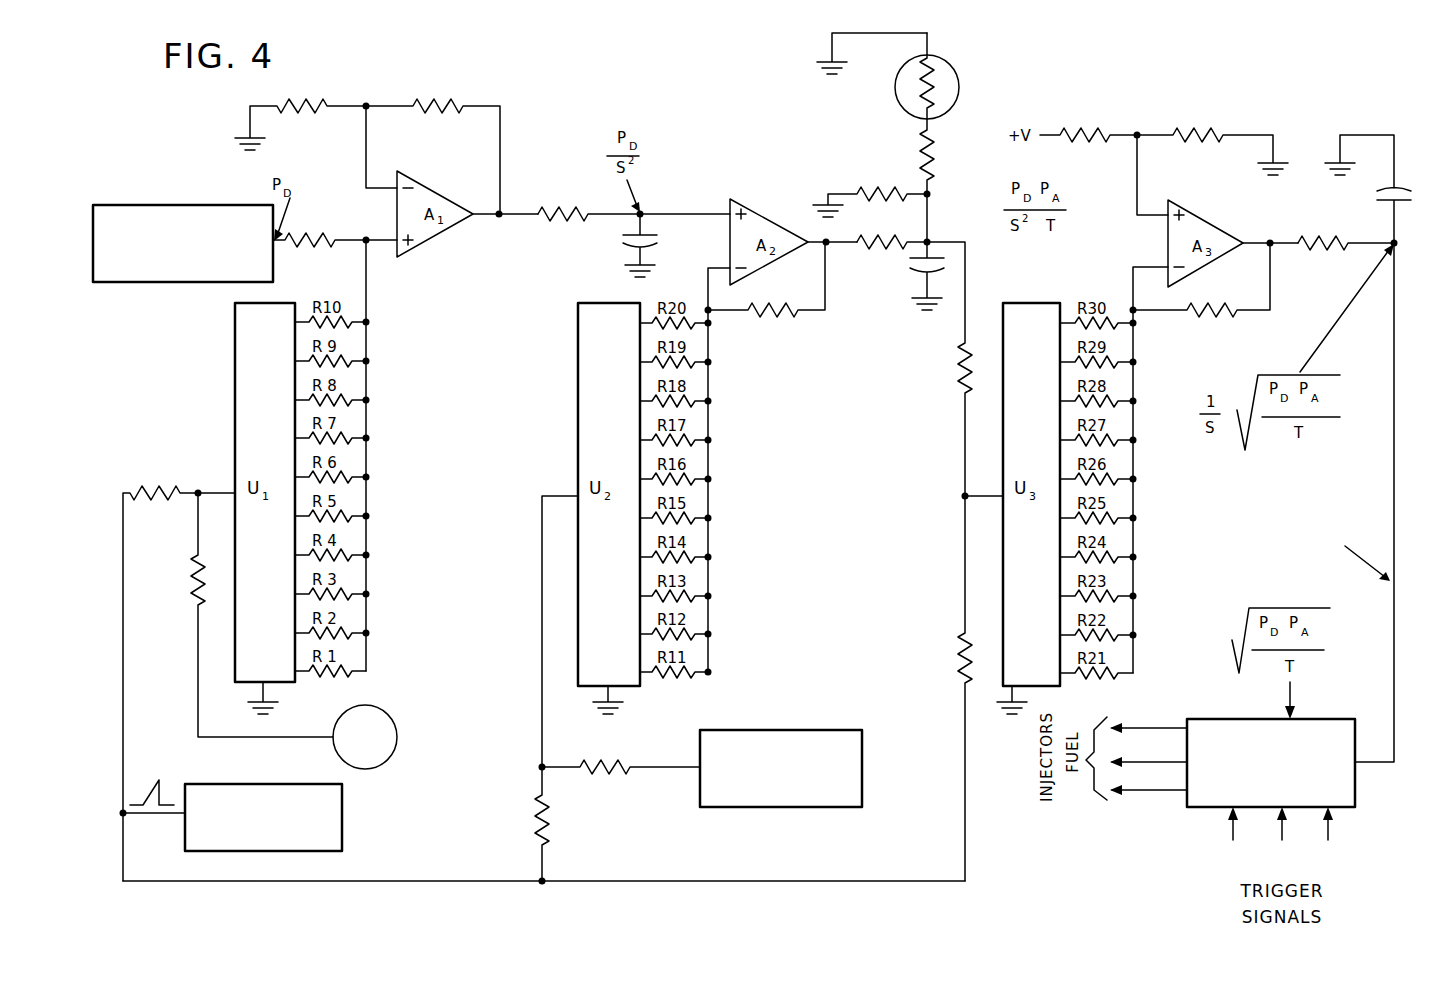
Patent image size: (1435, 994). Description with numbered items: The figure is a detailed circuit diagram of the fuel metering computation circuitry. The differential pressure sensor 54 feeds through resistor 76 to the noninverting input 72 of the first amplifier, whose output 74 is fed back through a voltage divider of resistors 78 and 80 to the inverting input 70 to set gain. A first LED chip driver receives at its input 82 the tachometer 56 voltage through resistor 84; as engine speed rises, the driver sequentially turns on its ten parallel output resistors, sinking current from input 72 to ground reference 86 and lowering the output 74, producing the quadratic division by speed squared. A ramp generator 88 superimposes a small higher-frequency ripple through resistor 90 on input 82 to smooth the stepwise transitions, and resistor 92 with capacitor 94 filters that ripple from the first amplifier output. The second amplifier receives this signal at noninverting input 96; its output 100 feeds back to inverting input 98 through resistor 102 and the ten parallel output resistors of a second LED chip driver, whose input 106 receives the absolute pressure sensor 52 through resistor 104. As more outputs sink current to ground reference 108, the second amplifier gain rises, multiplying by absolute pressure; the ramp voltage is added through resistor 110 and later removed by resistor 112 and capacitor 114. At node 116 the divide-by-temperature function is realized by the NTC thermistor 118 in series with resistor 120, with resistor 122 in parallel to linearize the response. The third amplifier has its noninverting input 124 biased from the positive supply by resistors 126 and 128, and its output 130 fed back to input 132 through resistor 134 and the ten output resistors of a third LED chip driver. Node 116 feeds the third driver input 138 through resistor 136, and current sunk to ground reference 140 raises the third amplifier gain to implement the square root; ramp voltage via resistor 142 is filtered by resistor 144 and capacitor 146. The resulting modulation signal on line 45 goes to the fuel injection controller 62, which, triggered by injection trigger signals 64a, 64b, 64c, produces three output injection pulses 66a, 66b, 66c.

The line 45 is at (1393, 471).
The absolute pressure sensor 52 is at (776, 808).
The differential pressure sensor 54 is at (165, 283).
The tachometer 56 is at (393, 719).
The fuel injection controller 62 is at (1368, 700).
The injection trigger signal 64a is at (1218, 838).
The injection trigger signal 64b is at (1278, 838).
The injection trigger signal 64c is at (1341, 837).
The output injection pulse 66a is at (1148, 721).
The output injection pulse 66b is at (1148, 754).
The output injection pulse 66c is at (1148, 783).
The inverting input 70 is at (380, 187).
The noninverting input 72 is at (386, 247).
The output 74 is at (497, 218).
The resistor 76 is at (337, 246).
The resistor 78 is at (438, 97).
The resistor 80 is at (308, 99).
The input 82 is at (221, 492).
The resistor 84 is at (190, 586).
The ground reference 86 is at (268, 691).
The ramp generator 88 is at (343, 817).
The resistor 90 is at (155, 485).
The resistor 92 is at (556, 213).
The capacitor 94 is at (624, 240).
The noninverting input 96 is at (711, 213).
The inverting input 98 is at (719, 267).
The output 100 is at (818, 238).
The resistor 102 is at (782, 318).
The resistor 104 is at (622, 771).
The input 106 is at (566, 496).
The ground reference 108 is at (628, 686).
The resistor 110 is at (548, 823).
The resistor 112 is at (885, 256).
The capacitor 114 is at (903, 272).
The node 116 is at (933, 236).
The NTC thermistor 118 is at (958, 73).
The resistor 120 is at (938, 158).
The resistor 122 is at (895, 194).
The noninverting input 124 is at (1153, 214).
The resistor 126 is at (1098, 130).
The resistor 128 is at (1203, 130).
The output 130 is at (1254, 242).
The input 132 is at (1152, 267).
The resistor 134 is at (1230, 310).
The resistor 136 is at (960, 372).
The input 138 is at (982, 495).
The ground reference 140 is at (1003, 695).
The resistor 142 is at (962, 656).
The resistor 144 is at (1345, 251).
The capacitor 146 is at (1378, 199).